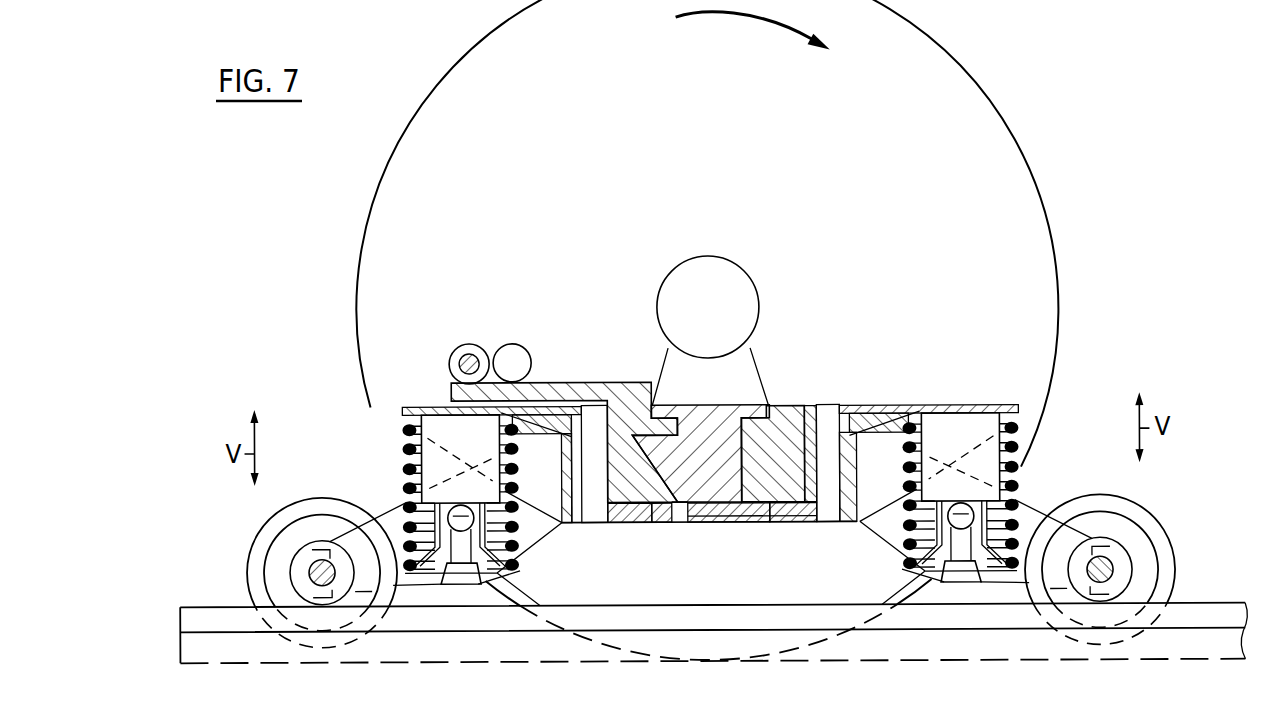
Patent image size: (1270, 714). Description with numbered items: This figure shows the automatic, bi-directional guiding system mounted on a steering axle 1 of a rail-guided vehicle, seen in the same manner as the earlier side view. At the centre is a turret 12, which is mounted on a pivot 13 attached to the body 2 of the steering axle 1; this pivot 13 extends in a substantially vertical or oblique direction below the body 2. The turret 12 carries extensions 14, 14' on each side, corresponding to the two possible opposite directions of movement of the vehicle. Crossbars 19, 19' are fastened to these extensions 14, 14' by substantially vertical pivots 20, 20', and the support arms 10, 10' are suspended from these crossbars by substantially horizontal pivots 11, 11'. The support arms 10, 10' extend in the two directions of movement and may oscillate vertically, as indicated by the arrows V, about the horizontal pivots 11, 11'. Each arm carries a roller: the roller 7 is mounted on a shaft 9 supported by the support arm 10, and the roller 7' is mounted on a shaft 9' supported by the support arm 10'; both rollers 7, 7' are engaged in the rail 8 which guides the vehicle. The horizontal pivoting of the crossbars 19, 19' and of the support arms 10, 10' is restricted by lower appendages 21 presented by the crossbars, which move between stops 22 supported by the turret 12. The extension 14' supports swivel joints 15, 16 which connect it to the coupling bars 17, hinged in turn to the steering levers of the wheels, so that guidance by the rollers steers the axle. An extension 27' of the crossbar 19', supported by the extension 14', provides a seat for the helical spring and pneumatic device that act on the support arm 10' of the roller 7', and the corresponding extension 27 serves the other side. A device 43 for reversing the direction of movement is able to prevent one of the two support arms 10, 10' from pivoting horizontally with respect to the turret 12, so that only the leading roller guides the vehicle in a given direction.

The steering axle 1 is at (711, 282).
The body 2 is at (787, 22).
The roller 7 is at (1128, 569).
The roller 7' is at (301, 572).
The rail 8 is at (1213, 614).
The shaft 9 is at (1126, 541).
The shaft 9' is at (295, 545).
The support arm 10 is at (970, 507).
The support arm 10' is at (450, 510).
The horizontal pivot 11 is at (887, 354).
The horizontal pivot 11' is at (542, 355).
The turret 12 is at (774, 420).
The pivot 13 is at (681, 524).
The extension 14 is at (793, 389).
The extension 14' is at (564, 389).
The swivel joint 15 is at (512, 343).
The swivel joint 16 is at (477, 343).
The coupling bar 17 is at (466, 356).
The crossbar 19 is at (857, 509).
The crossbar 19' is at (573, 504).
The vertical pivot 20 is at (845, 399).
The vertical pivot 20' is at (591, 398).
The lower appendage 21 is at (636, 524).
The stop 22 is at (665, 524).
The extension of the crossbar 27 is at (929, 456).
The extension of the crossbar 27' is at (481, 467).
The device for reversing the direction of movement 43 is at (723, 530).